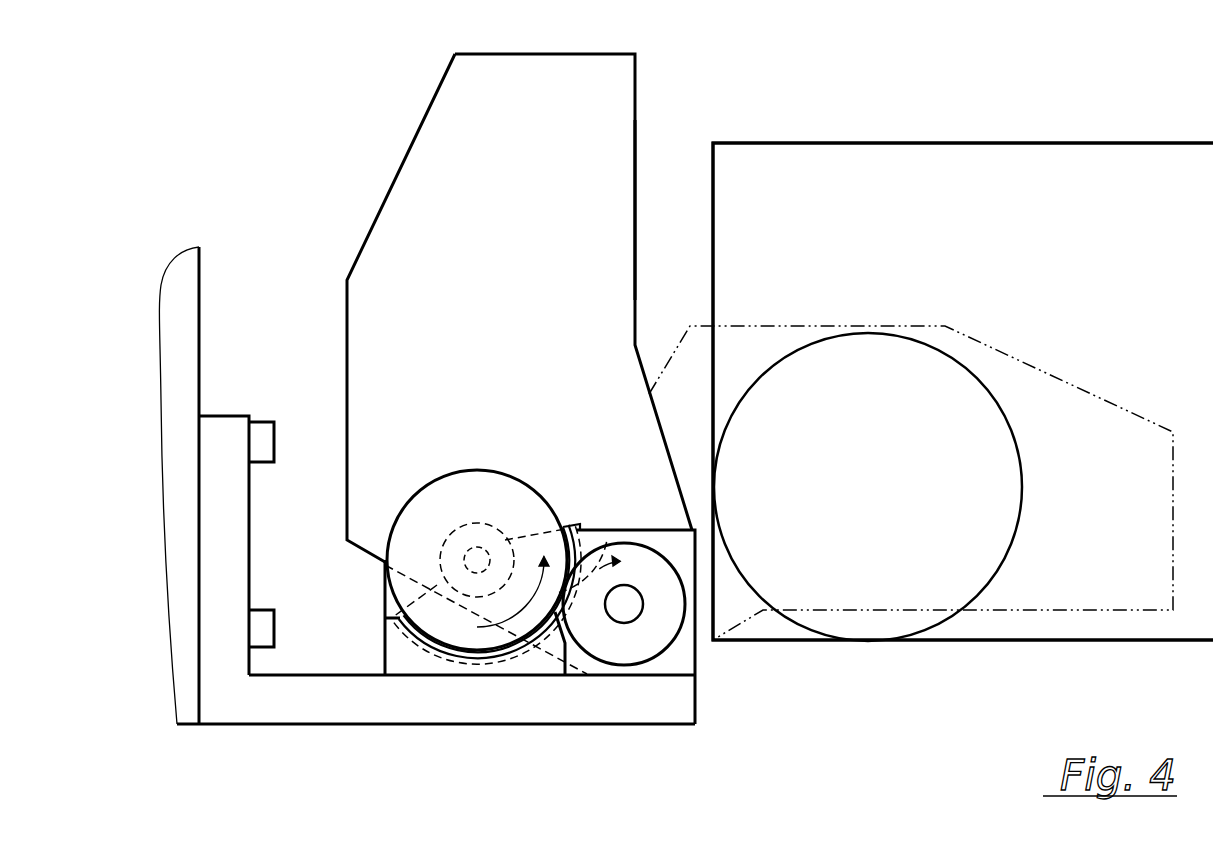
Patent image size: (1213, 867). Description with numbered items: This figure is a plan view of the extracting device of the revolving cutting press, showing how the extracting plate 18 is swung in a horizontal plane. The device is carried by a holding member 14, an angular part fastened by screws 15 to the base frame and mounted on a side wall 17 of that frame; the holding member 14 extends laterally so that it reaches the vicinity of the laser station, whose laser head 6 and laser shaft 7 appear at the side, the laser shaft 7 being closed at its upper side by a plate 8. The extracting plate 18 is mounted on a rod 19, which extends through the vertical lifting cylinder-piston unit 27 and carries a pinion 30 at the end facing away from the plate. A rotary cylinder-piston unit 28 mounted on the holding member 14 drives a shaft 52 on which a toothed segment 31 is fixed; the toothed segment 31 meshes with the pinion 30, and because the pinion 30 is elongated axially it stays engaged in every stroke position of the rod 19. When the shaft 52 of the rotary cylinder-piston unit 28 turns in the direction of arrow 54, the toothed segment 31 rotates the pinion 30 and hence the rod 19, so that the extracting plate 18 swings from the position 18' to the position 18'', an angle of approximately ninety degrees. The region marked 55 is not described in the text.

The laser head 6 is at (1000, 570).
The laser shaft 7 is at (1012, 193).
The plate 8 is at (963, 391).
The holding member 14 is at (240, 702).
The screws 15 is at (262, 433).
The side wall 17 is at (185, 303).
The extracting plate 18 is at (754, 308).
The position of extracting plate 18' is at (566, 210).
The position of extracting plate 18'' is at (911, 483).
The rod 19 is at (630, 605).
The lifting cylinder-piston unit 27 is at (663, 663).
The rotary cylinder-piston unit 28 is at (452, 508).
The pinion 30 is at (613, 643).
The toothed segment 31 is at (417, 647).
The shaft 52 is at (467, 560).
The arrow 54 is at (516, 617).
The guide wall 55 is at (578, 602).